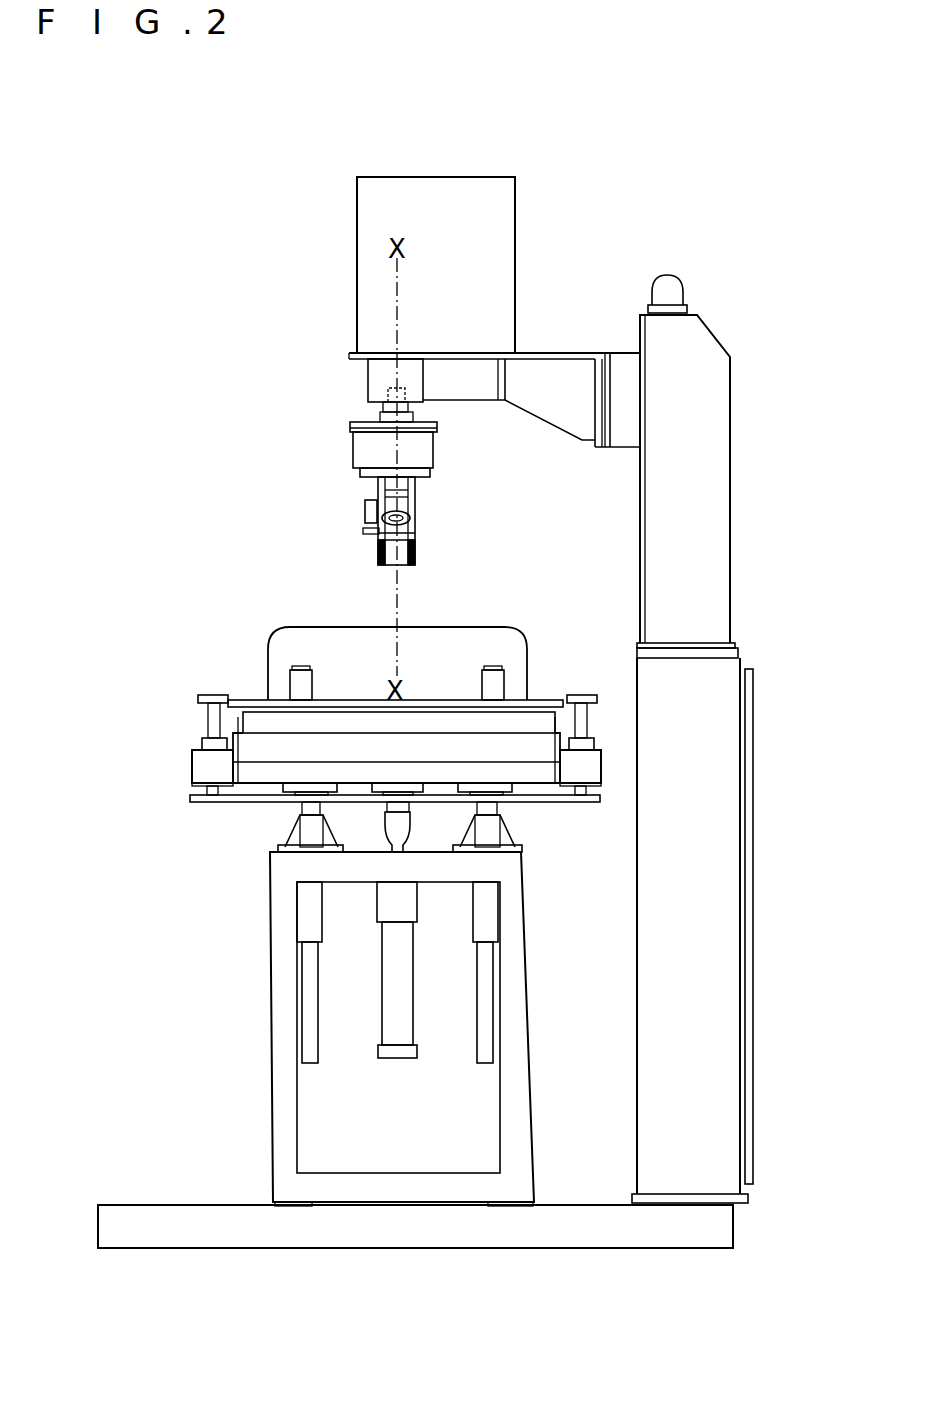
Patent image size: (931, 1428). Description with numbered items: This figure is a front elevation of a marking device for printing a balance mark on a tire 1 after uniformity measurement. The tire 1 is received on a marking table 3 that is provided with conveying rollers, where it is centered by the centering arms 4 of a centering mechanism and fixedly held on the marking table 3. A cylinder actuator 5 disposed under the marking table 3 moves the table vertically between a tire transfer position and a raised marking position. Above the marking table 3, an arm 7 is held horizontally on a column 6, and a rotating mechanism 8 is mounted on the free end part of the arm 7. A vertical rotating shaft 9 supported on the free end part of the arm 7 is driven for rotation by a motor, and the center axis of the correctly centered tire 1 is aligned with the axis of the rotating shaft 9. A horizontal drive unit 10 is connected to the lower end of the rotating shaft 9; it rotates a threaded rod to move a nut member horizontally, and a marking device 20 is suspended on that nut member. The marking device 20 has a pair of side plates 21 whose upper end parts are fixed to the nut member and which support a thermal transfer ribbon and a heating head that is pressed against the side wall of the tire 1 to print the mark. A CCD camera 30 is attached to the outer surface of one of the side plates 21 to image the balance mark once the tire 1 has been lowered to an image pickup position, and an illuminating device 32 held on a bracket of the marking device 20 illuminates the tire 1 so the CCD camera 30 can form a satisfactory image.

The tire 1 is at (330, 626).
The marking table 3 is at (300, 738).
The centering arms 4 is at (250, 700).
The cylinder actuator 5 is at (377, 1008).
The column 6 is at (752, 826).
The arm 7 is at (487, 405).
The rotating mechanism 8 is at (356, 377).
The rotating shaft 9 is at (373, 400).
The horizontal drive unit 10 is at (352, 458).
The marking device 20 is at (420, 538).
The side plates 21 is at (415, 558).
The CCD camera 30 is at (365, 515).
The illuminating device 32 is at (411, 518).